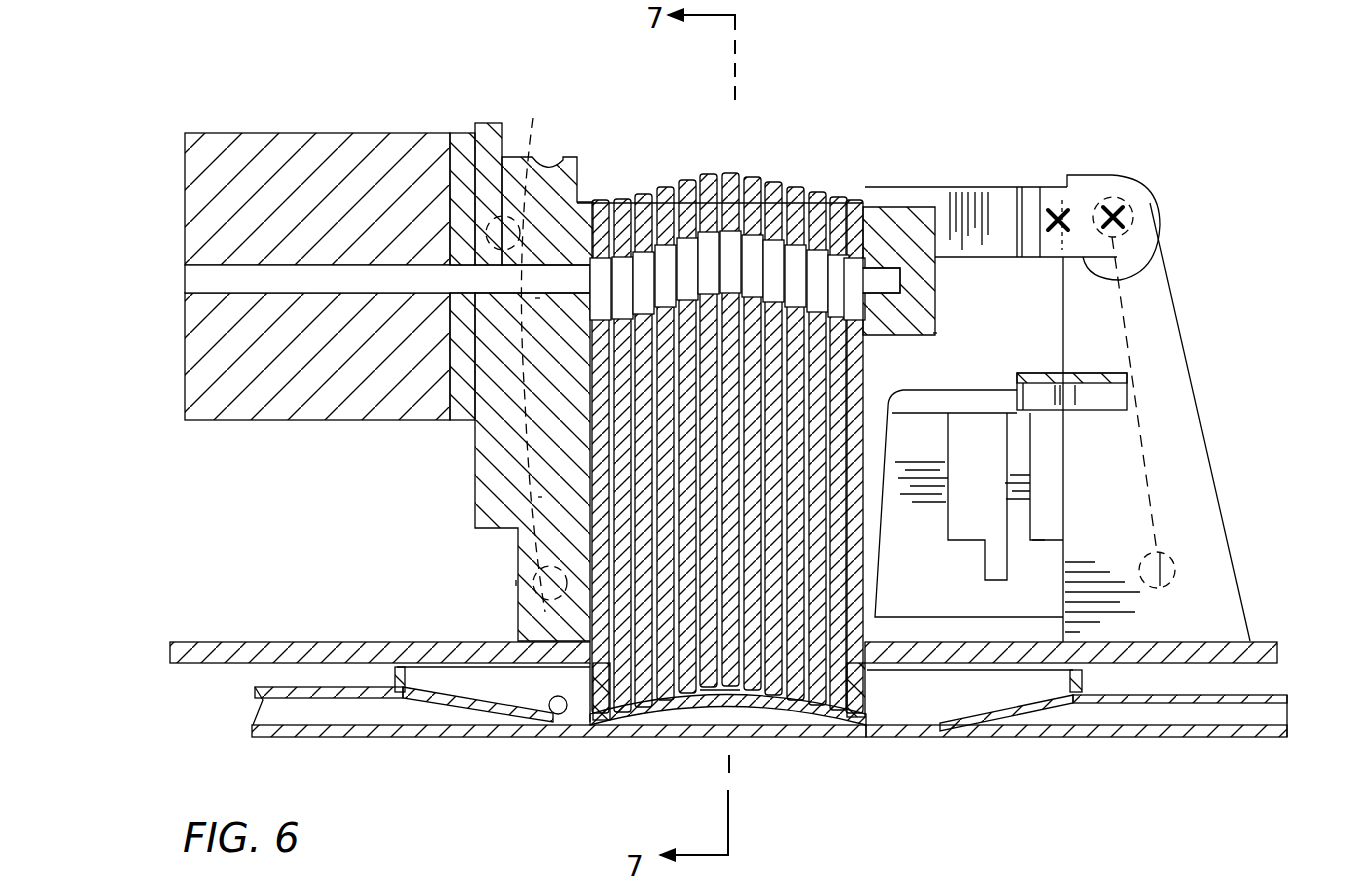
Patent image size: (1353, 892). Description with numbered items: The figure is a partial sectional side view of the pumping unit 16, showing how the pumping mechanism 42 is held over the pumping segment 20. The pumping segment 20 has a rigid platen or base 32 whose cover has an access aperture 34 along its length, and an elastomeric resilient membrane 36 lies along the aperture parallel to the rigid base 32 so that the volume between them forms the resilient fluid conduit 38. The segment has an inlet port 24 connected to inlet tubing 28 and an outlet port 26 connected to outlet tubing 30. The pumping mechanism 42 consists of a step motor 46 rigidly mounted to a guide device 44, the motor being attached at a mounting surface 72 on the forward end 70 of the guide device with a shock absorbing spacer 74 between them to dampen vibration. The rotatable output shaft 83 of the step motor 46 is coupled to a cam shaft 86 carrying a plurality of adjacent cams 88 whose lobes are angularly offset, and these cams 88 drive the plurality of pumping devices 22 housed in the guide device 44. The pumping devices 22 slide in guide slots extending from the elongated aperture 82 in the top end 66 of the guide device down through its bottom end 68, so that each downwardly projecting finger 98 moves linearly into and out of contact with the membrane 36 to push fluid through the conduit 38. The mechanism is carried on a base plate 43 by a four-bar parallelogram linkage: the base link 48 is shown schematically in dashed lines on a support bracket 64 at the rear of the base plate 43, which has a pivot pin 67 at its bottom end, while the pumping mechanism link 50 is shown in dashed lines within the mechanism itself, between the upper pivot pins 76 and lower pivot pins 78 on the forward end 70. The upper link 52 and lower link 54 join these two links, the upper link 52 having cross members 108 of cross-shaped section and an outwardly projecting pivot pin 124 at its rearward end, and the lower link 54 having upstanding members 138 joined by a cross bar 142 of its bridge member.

The pumping unit 16 is at (1098, 174).
The pumping segment 20 is at (470, 742).
The pumping devices 22 is at (645, 194).
The inlet port 24 is at (1157, 738).
The outlet port 26 is at (372, 738).
The inlet tubing 28 is at (1253, 738).
The outlet tubing 30 is at (278, 740).
The rigid platen or base 32 is at (897, 740).
The access aperture 34 is at (1032, 682).
The resilient membrane 36 is at (548, 718).
The resilient fluid conduit 38 is at (712, 708).
The pumping mechanism 42 is at (424, 132).
The base plate 43 is at (313, 641).
The guide device 44 is at (574, 158).
The step motor 46 is at (298, 132).
The base link 48 is at (1135, 445).
The pumping mechanism link 50 is at (540, 497).
The upper link 52 is at (947, 190).
The lower link 54 is at (1050, 532).
The support bracket 64 is at (1197, 380).
The top end of guide device 66 is at (915, 340).
The pivot pin 67 is at (1177, 568).
The bottom end of guide device 68 is at (515, 583).
The forward end of guide device 70 is at (470, 462).
The mounting surface 72 is at (490, 123).
The shock absorbing spacer 74 is at (462, 133).
The upper pivot pins 76 is at (523, 347).
The lower pivot pins 78 is at (522, 617).
The elongated aperture 82 is at (897, 207).
The output shaft 83 is at (237, 296).
The cam shaft 86 is at (537, 300).
The cams 88 is at (903, 285).
The finger 98 is at (872, 690).
The cross members 108 is at (1068, 228).
The pivot pin 124 is at (1135, 205).
The upstanding members 138 is at (977, 457).
The cross bar 142 is at (1083, 374).